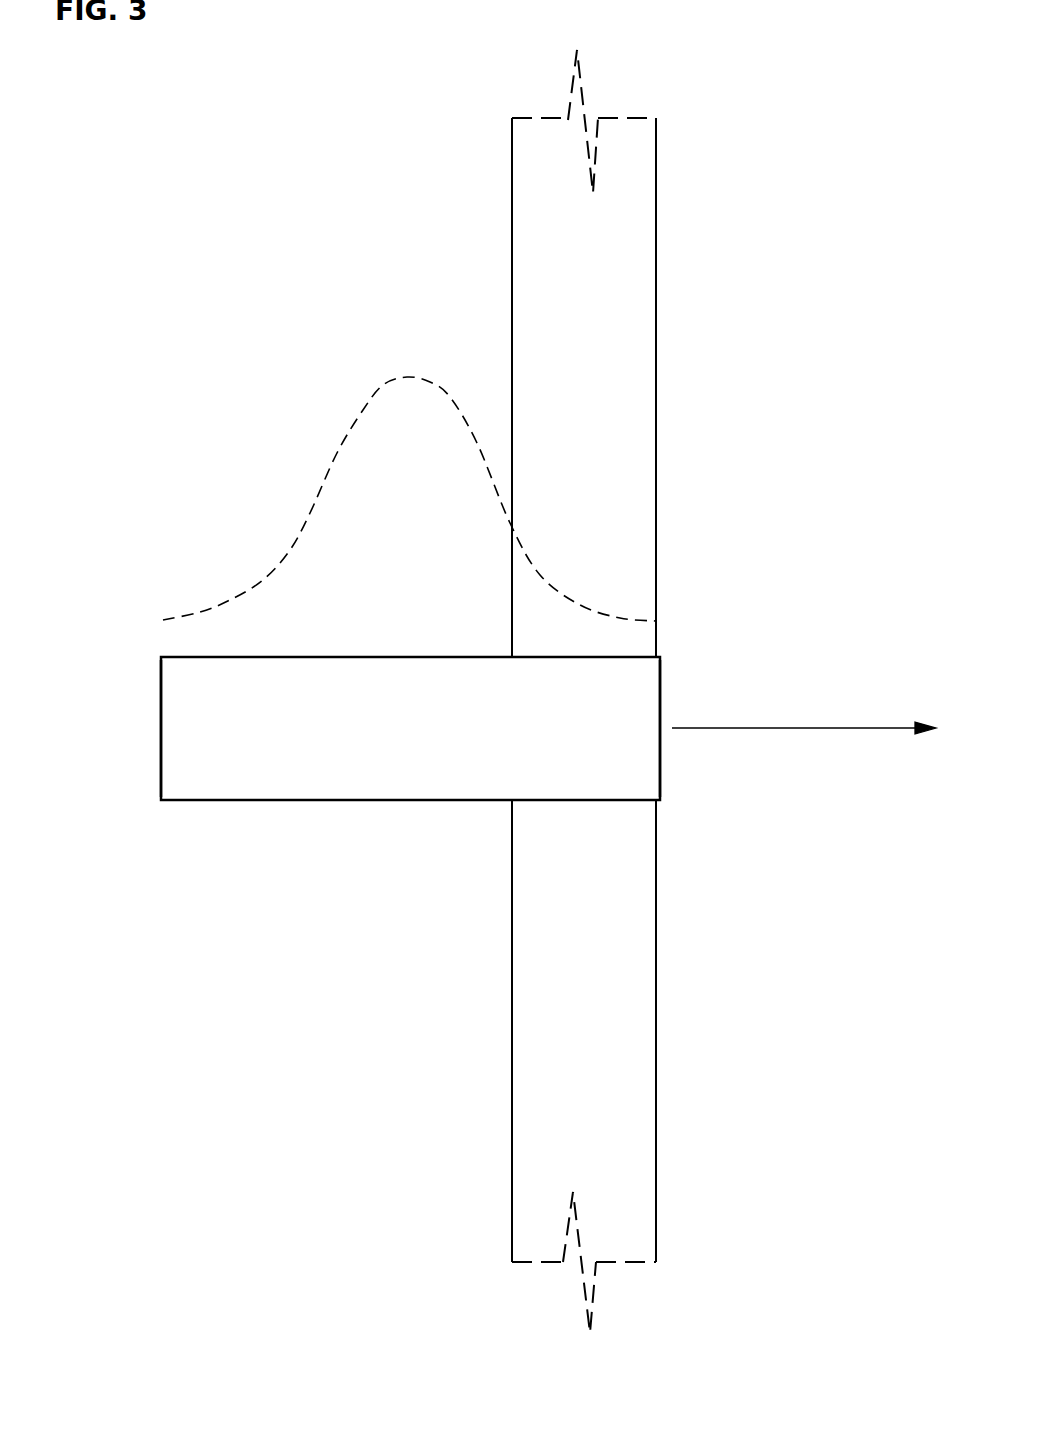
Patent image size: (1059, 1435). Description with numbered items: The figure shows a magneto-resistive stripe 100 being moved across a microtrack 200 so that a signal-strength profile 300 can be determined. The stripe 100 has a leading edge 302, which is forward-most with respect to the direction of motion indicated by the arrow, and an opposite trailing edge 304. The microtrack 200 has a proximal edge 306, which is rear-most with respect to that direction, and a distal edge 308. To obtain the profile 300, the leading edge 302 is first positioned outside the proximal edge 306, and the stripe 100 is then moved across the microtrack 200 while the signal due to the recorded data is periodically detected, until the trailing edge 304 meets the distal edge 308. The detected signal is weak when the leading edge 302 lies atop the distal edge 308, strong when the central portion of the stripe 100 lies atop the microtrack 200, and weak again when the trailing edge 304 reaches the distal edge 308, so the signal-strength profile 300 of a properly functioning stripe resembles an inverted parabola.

The magneto-resistive stripe 100 is at (378, 733).
The microtrack 200 is at (607, 256).
The signal-strength profile 300 is at (382, 382).
The leading edge 302 is at (662, 699).
The trailing edge 304 is at (160, 760).
The proximal edge 306 is at (510, 927).
The distal edge 308 is at (657, 925).